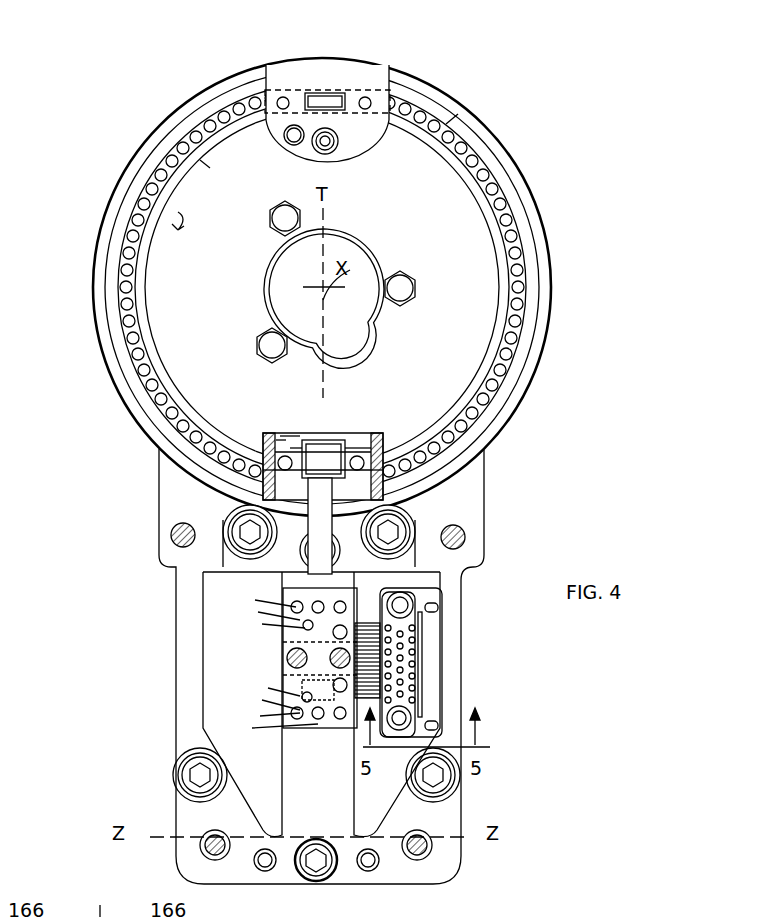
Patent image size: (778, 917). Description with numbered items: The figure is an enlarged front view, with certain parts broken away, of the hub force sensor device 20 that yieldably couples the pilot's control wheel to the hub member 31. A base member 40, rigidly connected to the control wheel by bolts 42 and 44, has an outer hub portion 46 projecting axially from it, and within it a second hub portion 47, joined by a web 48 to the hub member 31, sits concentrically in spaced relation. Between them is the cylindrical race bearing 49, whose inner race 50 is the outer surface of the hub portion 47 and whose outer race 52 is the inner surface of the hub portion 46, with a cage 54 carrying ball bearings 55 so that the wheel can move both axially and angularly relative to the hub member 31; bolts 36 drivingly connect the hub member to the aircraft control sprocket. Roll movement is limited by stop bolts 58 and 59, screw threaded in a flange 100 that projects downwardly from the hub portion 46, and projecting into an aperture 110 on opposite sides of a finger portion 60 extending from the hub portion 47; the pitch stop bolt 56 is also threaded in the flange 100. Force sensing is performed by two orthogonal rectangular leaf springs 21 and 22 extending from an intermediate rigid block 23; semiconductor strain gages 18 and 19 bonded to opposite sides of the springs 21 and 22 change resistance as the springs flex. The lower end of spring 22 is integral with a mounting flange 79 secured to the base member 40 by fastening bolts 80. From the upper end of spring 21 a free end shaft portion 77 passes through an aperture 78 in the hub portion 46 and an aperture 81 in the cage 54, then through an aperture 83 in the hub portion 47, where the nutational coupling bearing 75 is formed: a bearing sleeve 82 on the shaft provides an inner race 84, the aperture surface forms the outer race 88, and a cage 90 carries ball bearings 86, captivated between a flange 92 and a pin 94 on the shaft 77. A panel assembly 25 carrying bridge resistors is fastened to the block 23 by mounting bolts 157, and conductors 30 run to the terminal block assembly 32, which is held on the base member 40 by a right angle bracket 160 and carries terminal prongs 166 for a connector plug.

The semiconductor strain gages 18 is at (300, 598).
The semiconductor strain gages 19 is at (329, 694).
The hub force sensor device 20 is at (270, 665).
The roll axis control force sensing leaf spring 21 is at (336, 558).
The pitch axis control force sensing leaf spring 22 is at (334, 808).
The intermediate rigid block 23 is at (285, 672).
The panel assembly 25 is at (312, 733).
The electrical conductors 30 is at (371, 703).
The hub member 31 is at (176, 230).
The terminal block assembly 32 is at (422, 652).
The bolts 36 is at (262, 338).
The base member 40 is at (174, 715).
The bolts 42 is at (171, 535).
The bolts 44 is at (205, 850).
The outer hub portion 46 is at (544, 310).
The second hub portion 47 is at (505, 308).
The web 48 is at (209, 168).
The cylindrical race bearing 49 is at (450, 121).
The inner race 50 is at (508, 228).
The outer race 52 is at (524, 227).
The ball bearing cage 54 is at (537, 243).
The ball bearings 55 is at (501, 173).
The stop bolt 56 is at (320, 143).
The stop bolt 58 is at (283, 96).
The stop bolt 59 is at (368, 96).
The finger portion 60 is at (337, 100).
The nutational coupling bearing 75 is at (290, 432).
The free end shaft portion 77 is at (328, 440).
The aperture 78 is at (298, 500).
The mounting flange 79 is at (369, 871).
The fastening bolts 80 is at (173, 776).
The aperture 81 is at (392, 485).
The bearing sleeve 82 is at (340, 447).
The aperture 83 is at (360, 445).
The inner race 84 is at (306, 440).
The ball bearings 86 is at (270, 462).
The outer race 88 is at (378, 452).
The ball bearing cage 90 is at (286, 474).
The flange 92 is at (355, 474).
The pin 94 is at (280, 436).
The flange 100 is at (366, 127).
The aperture 110 is at (318, 94).
The mounting bolts 157 is at (318, 650).
The right angle bracket 160 is at (443, 678).
The terminal prongs 166 is at (418, 702).